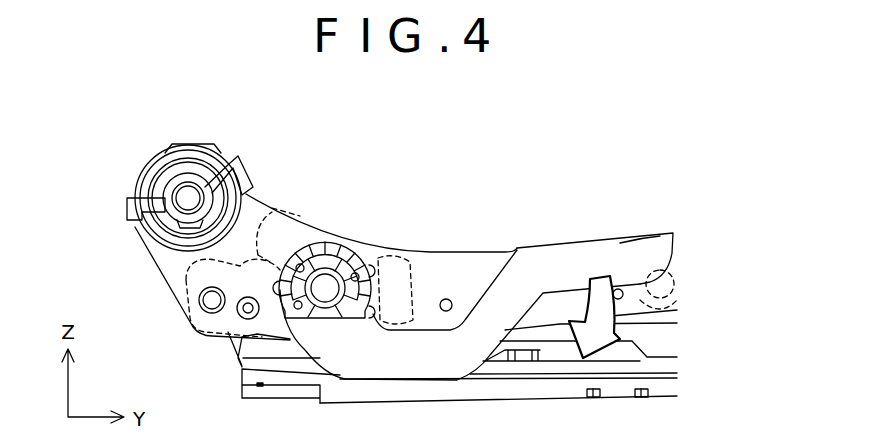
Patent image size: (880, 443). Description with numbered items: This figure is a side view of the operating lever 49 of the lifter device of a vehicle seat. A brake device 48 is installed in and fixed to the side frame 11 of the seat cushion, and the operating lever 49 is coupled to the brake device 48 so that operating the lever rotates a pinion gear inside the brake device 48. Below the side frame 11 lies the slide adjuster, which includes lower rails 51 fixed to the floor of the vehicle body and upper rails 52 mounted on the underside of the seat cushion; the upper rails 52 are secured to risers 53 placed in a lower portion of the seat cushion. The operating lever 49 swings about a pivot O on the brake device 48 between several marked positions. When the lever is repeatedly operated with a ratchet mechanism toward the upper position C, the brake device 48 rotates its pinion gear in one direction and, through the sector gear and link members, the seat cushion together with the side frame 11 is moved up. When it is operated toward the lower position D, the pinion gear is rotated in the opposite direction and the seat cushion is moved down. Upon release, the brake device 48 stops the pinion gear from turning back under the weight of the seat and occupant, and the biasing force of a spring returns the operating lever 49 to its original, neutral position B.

The side frame 11 is at (487, 250).
The brake device 48 is at (343, 240).
The operating lever 49 is at (611, 243).
The lower rail 51 is at (672, 381).
The upper rail 52 is at (242, 395).
The riser 53 is at (670, 338).
The pivot axis O is at (325, 288).
The neutral position B is at (325, 288).
The upper position C is at (325, 288).
The lower position D is at (325, 288).